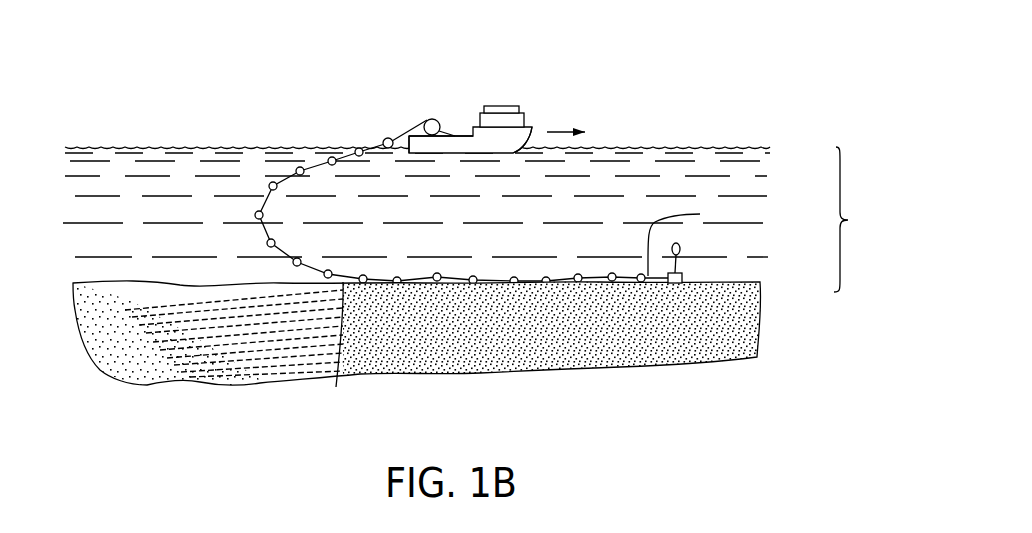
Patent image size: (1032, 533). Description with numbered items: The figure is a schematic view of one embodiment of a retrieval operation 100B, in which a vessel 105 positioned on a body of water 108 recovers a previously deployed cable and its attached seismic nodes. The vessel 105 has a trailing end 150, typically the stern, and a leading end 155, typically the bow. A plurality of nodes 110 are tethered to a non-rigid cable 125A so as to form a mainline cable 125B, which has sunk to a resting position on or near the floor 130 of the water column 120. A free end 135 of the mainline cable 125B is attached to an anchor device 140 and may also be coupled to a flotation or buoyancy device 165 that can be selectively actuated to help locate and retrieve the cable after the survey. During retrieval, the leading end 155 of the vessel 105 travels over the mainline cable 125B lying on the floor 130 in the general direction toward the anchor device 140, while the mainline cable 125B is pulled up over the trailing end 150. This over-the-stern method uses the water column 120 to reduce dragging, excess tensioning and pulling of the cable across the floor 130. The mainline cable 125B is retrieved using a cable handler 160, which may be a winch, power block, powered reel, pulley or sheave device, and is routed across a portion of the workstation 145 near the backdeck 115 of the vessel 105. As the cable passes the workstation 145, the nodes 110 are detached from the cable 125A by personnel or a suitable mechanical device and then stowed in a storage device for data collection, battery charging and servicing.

The retrieval operation 100B is at (712, 101).
The vessel 105 is at (541, 114).
The body of water 108 is at (738, 147).
The nodes 110 is at (300, 167).
The backdeck 115 is at (461, 133).
The water column 120 is at (484, 219).
The cable 125A is at (453, 133).
The mainline cable 125B is at (339, 349).
The floor 130 is at (203, 283).
The free end 135 is at (700, 214).
The anchor device 140 is at (684, 276).
The workstation 145 is at (402, 114).
The trailing end 150 is at (410, 153).
The leading end 155 is at (515, 136).
The cable handler 160 is at (439, 119).
The flotation or buoyancy device 165 is at (680, 248).